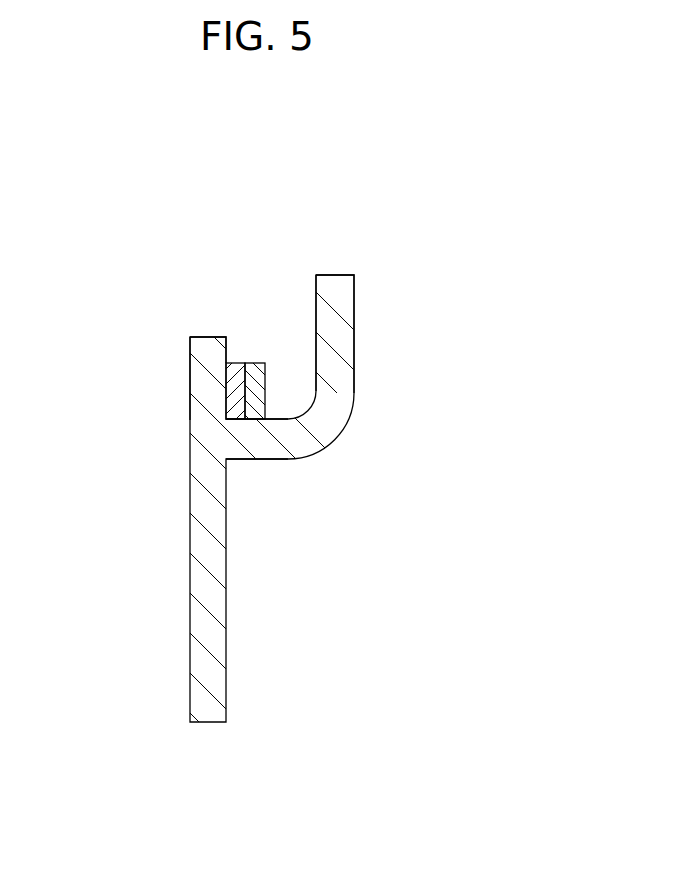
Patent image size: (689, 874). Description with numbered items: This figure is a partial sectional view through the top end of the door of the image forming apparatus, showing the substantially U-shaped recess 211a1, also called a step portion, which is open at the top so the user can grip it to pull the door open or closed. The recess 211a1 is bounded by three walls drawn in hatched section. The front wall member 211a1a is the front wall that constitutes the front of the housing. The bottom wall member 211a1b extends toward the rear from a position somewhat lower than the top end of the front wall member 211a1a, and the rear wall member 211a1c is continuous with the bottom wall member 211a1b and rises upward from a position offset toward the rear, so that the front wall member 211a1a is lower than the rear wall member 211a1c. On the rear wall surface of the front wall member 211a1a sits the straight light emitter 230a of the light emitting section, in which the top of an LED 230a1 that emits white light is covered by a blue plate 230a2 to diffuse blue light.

The recess 211a1 is at (282, 321).
The front wall member 211a1a is at (207, 337).
The bottom wall member 211a1b is at (262, 443).
The rear wall member 211a1c is at (338, 372).
The straight light emitter 230a is at (353, 292).
The LED 230a1 is at (232, 362).
The blue plate 230a2 is at (255, 362).